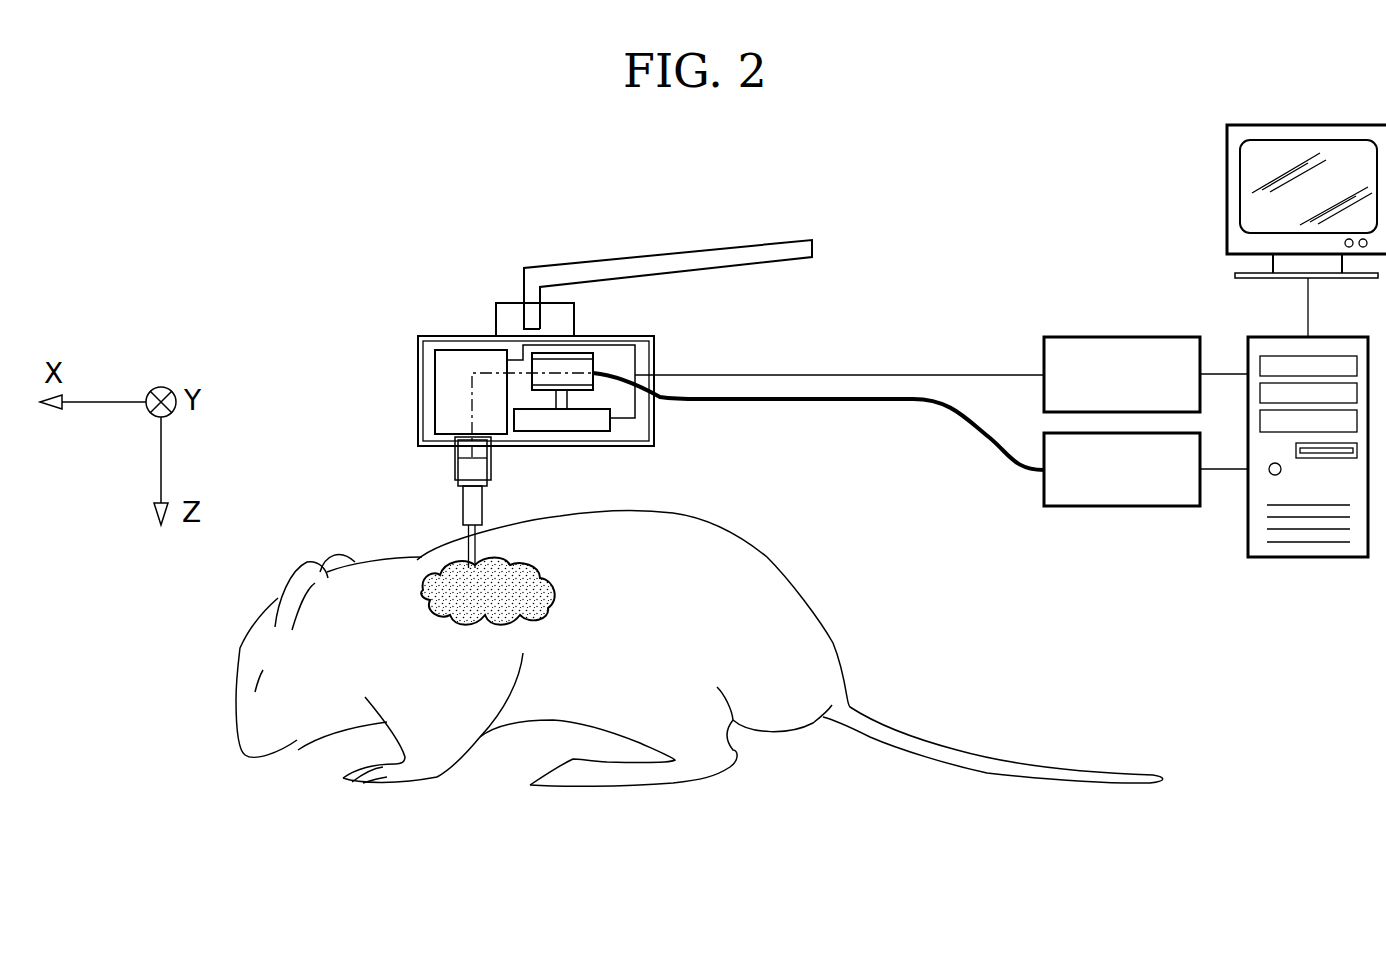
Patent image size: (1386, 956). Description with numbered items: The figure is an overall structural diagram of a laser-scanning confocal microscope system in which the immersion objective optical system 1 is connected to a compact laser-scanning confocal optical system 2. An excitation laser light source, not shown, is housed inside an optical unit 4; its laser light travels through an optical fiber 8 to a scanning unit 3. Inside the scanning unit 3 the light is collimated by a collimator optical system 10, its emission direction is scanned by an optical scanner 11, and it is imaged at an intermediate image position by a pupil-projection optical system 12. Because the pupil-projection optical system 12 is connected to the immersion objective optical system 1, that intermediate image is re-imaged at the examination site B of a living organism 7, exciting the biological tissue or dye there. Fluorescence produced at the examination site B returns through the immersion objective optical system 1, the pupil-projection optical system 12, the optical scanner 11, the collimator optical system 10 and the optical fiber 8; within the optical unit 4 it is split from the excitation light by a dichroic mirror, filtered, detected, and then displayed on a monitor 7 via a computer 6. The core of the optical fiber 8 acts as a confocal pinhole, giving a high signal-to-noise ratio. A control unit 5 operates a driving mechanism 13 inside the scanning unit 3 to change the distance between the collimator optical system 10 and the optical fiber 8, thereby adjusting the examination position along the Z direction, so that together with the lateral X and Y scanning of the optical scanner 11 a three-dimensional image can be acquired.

The immersion objective optical system 1 is at (482, 509).
The laser-scanning confocal optical system 2 is at (988, 127).
The scanning unit 3 is at (418, 370).
The optical unit 4 is at (1117, 507).
The control unit 5 is at (1127, 337).
The computer 6 is at (1291, 557).
The monitor 7 is at (1227, 190).
The optical fiber 8 is at (830, 400).
The collimator optical system 10 is at (585, 355).
The optical scanner 11 is at (453, 356).
The pupil-projection optical system 12 is at (455, 458).
The driving mechanism 13 is at (593, 427).
The examination site B is at (553, 588).